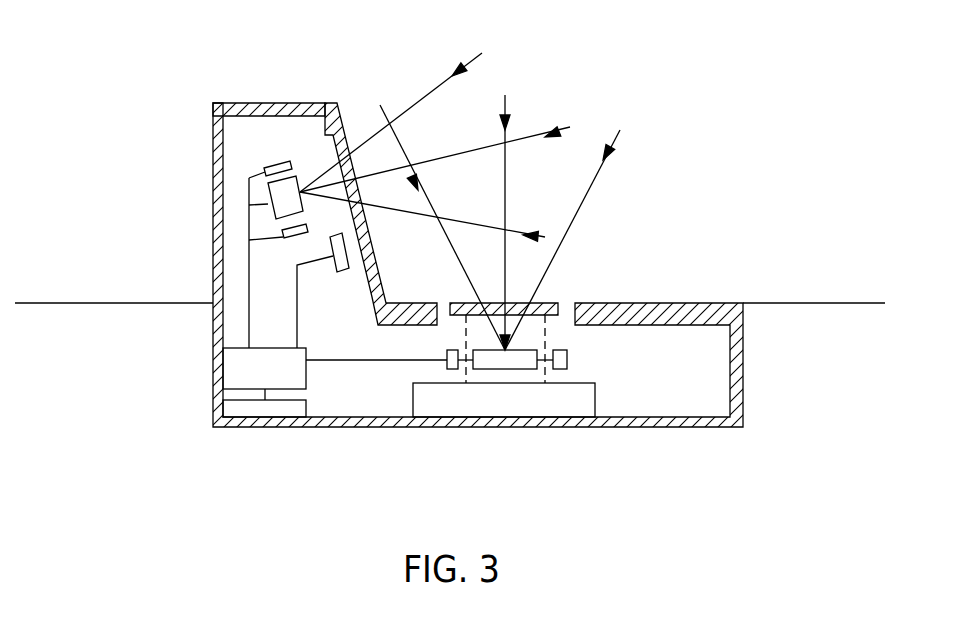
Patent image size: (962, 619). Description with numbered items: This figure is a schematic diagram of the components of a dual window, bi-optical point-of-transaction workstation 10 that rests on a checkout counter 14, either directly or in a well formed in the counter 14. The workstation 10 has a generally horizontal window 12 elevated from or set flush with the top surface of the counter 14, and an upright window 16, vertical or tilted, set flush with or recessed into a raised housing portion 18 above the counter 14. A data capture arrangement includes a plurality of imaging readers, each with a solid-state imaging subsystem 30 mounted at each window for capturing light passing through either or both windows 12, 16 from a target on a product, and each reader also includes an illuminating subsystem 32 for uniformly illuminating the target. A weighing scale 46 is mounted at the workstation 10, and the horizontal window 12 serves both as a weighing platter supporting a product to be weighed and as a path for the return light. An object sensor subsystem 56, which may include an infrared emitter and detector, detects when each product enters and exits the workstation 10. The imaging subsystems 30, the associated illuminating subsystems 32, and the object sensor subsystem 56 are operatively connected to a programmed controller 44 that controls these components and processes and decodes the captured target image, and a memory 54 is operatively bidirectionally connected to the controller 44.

The point-of-transaction workstation 10 is at (616, 230).
The generally horizontal window 12 is at (548, 303).
The counter 14 is at (48, 303).
The upright window 16 is at (372, 234).
The raised housing portion 18 is at (313, 103).
The solid-state imaging subsystem 30 is at (514, 437).
The illuminating subsystem 32 is at (580, 437).
The controller 44 is at (230, 364).
The weighing scale 46 is at (428, 400).
The memory 54 is at (230, 407).
The object sensor subsystem 56 is at (333, 256).